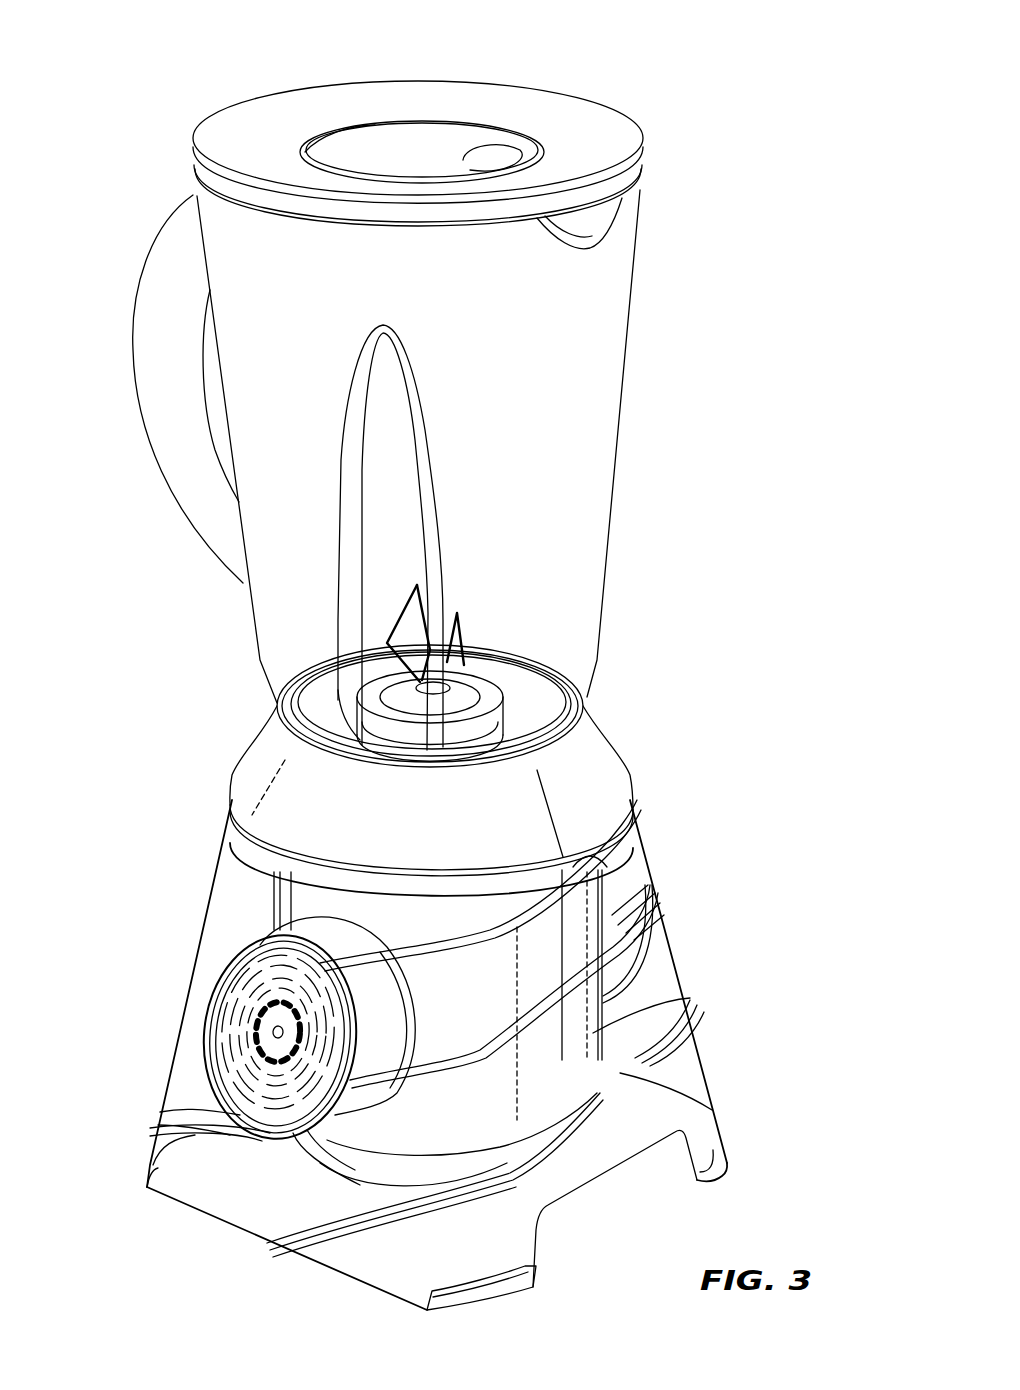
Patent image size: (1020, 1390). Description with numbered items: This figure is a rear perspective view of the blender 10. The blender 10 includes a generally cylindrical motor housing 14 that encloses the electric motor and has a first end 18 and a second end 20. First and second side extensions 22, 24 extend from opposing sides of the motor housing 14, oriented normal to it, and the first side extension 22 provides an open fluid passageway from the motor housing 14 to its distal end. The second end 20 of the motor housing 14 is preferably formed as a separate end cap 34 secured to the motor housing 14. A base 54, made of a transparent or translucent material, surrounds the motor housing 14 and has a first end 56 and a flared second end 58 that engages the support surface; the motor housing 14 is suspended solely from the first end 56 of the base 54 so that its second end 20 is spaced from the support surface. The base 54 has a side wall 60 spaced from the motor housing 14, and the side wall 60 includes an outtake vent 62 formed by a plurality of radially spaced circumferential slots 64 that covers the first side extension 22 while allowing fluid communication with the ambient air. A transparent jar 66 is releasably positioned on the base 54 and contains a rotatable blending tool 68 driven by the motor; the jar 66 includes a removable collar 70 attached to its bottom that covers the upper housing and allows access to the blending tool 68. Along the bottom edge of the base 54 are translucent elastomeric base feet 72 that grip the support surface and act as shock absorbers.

The blender 10 is at (230, 50).
The motor housing 14 is at (585, 912).
The first end 18 is at (632, 848).
The second end 20 is at (597, 1033).
The first side extension 22 is at (400, 1013).
The second side extension 24 is at (630, 933).
The end cap 34 is at (507, 1157).
The base 54 is at (677, 980).
The first end 56 is at (228, 841).
The second end 58 is at (597, 1170).
The side wall 60 is at (177, 1068).
The outtake vent 62 is at (203, 1022).
The circumferential slots 64 is at (217, 992).
The jar 66 is at (258, 645).
The blending tool 68 is at (455, 632).
The collar 70 is at (265, 766).
The base feet 72 is at (153, 1153).